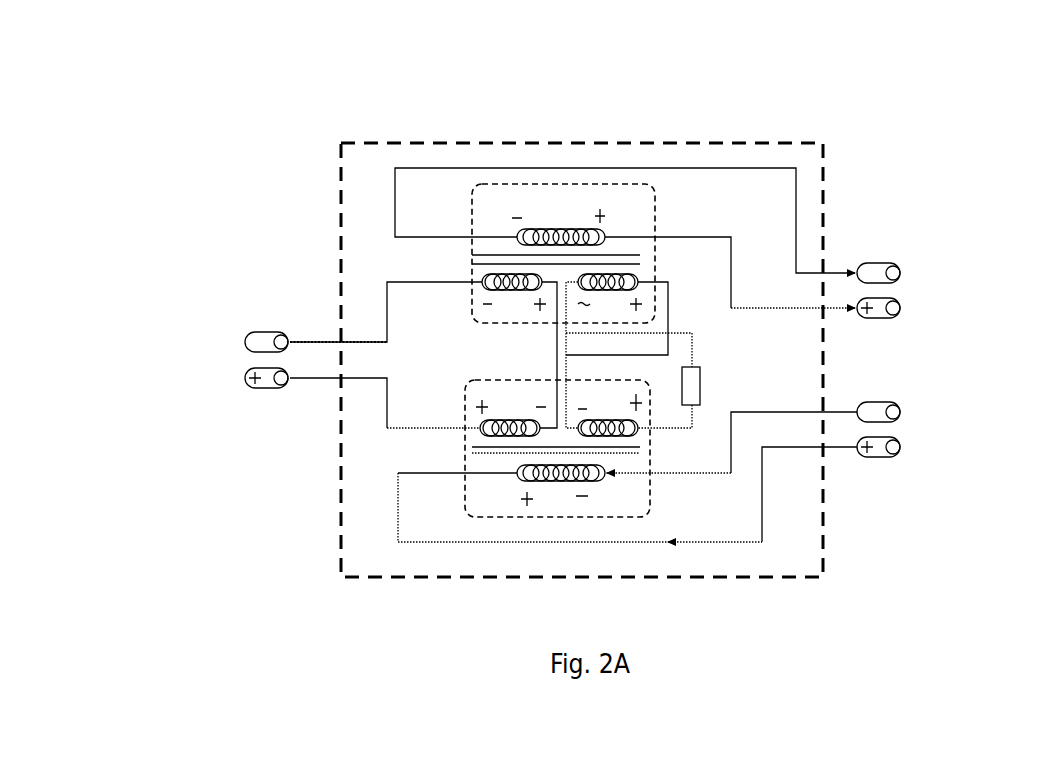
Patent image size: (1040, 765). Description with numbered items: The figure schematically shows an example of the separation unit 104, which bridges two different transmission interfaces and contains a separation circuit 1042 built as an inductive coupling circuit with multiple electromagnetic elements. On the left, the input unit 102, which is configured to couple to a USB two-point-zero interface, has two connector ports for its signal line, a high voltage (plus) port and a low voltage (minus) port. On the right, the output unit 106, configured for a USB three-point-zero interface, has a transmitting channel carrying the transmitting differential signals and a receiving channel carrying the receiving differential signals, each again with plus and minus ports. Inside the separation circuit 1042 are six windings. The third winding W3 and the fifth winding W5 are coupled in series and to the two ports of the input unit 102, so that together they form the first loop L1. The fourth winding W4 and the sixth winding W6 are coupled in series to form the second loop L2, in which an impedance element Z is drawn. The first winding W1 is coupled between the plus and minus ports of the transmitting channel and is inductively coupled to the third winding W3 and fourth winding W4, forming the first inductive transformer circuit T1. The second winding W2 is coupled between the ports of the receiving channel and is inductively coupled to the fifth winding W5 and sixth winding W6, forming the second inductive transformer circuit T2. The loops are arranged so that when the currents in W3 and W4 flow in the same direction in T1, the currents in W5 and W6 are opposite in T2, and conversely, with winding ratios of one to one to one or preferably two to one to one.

The input unit 102 is at (226, 398).
The separation unit 104 is at (573, 310).
The separation circuit 1042 is at (518, 141).
The output unit 106 is at (935, 401).
The first inductive transformer circuit T1 is at (655, 215).
The second inductive transformer circuit T2 is at (650, 494).
The first loop L1 is at (387, 303).
The second loop L2 is at (668, 316).
The first winding W1 is at (558, 217).
The second winding W2 is at (561, 488).
The third winding W3 is at (514, 294).
The fourth winding W4 is at (610, 294).
The fifth winding W5 is at (511, 413).
The sixth winding W6 is at (610, 412).
The impedance element Z is at (691, 386).